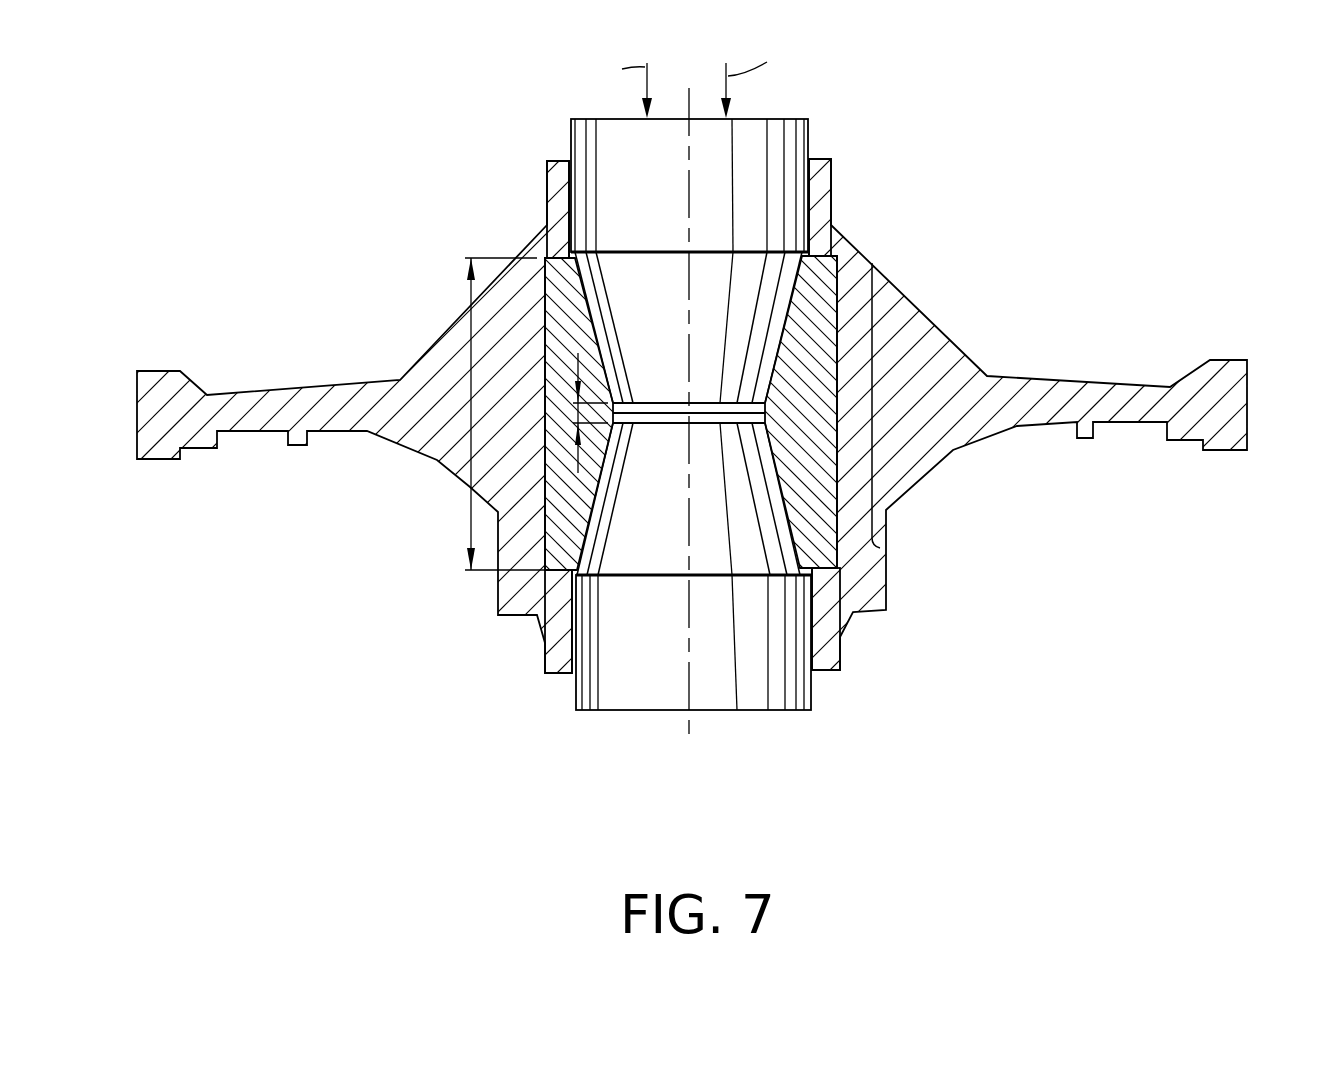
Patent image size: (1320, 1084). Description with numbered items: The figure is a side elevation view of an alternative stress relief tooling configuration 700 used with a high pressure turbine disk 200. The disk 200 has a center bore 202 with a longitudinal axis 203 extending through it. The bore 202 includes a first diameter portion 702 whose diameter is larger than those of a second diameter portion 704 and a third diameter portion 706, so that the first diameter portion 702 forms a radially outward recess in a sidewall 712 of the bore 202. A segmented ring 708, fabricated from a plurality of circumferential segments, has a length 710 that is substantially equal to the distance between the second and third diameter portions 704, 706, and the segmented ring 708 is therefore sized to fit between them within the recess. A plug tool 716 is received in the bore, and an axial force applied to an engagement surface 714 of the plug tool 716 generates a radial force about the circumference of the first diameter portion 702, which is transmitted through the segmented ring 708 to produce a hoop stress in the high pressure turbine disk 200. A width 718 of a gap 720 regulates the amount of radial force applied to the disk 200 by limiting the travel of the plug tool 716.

The stress relief tooling configuration 700 is at (316, 205).
The high pressure turbine disk 200 is at (440, 395).
The center bore 202 is at (545, 706).
The longitudinal axis 203 is at (693, 723).
The first diameter portion 702 is at (874, 427).
The second diameter portion 704 is at (855, 159).
The third diameter portion 706 is at (860, 668).
The segmented ring 708 is at (817, 294).
The length 710 is at (468, 528).
The sidewall 712 is at (572, 628).
The engagement surface 714 is at (773, 117).
The plug tool 716 is at (664, 223).
The width 718 is at (582, 372).
The gap 720 is at (677, 424).